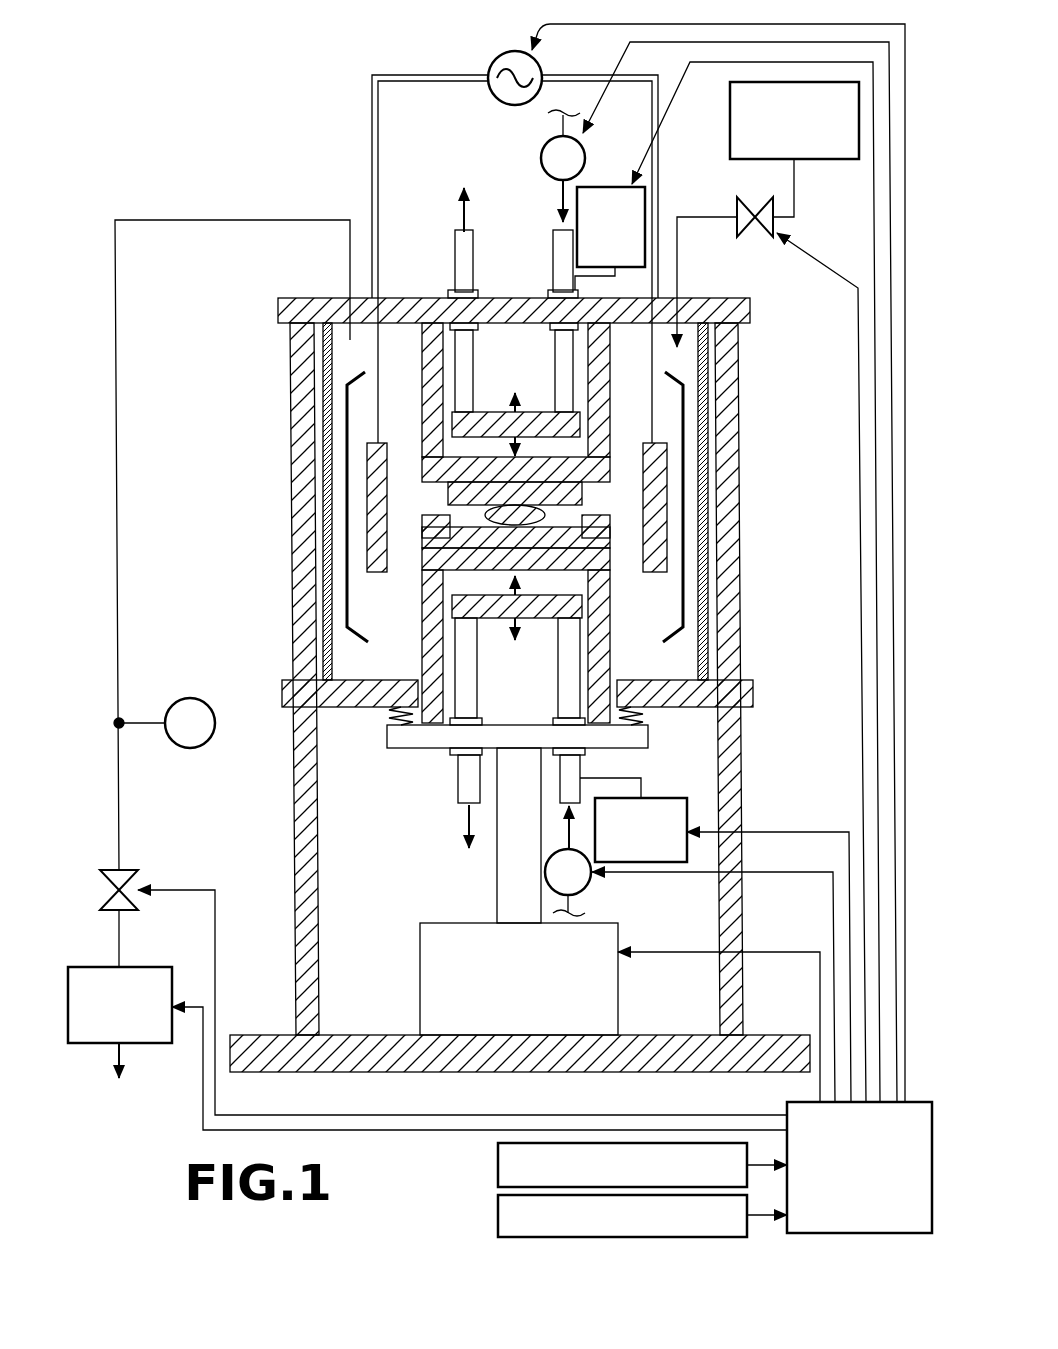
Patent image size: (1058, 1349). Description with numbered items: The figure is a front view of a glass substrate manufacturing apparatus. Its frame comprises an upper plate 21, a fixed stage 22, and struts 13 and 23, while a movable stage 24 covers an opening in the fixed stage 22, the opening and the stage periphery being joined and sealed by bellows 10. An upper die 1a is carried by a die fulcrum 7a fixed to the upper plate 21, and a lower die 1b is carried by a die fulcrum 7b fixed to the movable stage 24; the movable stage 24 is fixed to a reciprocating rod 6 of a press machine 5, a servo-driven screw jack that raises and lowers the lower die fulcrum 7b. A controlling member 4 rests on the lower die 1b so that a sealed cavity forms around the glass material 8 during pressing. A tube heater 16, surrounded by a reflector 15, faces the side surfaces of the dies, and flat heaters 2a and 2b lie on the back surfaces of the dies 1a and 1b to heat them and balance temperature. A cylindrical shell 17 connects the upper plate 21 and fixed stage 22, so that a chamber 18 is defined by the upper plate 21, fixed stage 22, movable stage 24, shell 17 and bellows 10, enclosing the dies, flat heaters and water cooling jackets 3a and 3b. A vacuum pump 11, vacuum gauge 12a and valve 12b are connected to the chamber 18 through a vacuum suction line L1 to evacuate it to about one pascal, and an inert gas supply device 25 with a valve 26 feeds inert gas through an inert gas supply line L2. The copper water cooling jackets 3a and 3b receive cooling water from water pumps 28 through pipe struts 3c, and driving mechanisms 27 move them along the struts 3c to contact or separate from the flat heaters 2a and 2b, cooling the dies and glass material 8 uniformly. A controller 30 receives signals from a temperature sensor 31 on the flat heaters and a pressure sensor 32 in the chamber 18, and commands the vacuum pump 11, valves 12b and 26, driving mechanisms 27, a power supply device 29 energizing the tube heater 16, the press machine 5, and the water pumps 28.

The upper die 1a is at (585, 493).
The lower die 1b is at (600, 538).
The flat heater 2a is at (600, 471).
The flat heater 2b is at (595, 560).
The water cooling jacket 3a is at (560, 425).
The water cooling jacket 3b is at (567, 611).
The struts 3c is at (572, 360).
The controlling member 4 is at (430, 520).
The press machine 5 is at (597, 984).
The reciprocating rod 6 is at (510, 876).
The die fulcrum 7a is at (347, 378).
The die fulcrum 7b is at (352, 640).
The glass material 8 is at (543, 515).
The bellows 10 is at (638, 714).
The vacuum pump 11 is at (148, 967).
The vacuum gauge 12a is at (188, 748).
The valve 12b is at (132, 870).
The strut 13 is at (738, 818).
The reflector 15 is at (328, 511).
The tube heater 16 is at (367, 455).
The cylindrical shell 17 is at (323, 576).
The chamber 18 is at (655, 660).
The upper plate 21 is at (417, 298).
The fixed stage 22 is at (356, 707).
The strut 23 is at (292, 860).
The movable stage 24 is at (420, 748).
The inert gas supply device 25 is at (730, 104).
The valve 26 is at (739, 231).
The driving mechanisms 27 is at (617, 184).
The water pumps 28 is at (541, 158).
The power supply device 29 is at (516, 52).
The controller 30 is at (787, 1105).
The temperature sensor 31 is at (498, 1170).
The pressure sensor 32 is at (498, 1217).
The vacuum suction line L1 is at (230, 220).
The inert gas supply line L2 is at (677, 217).